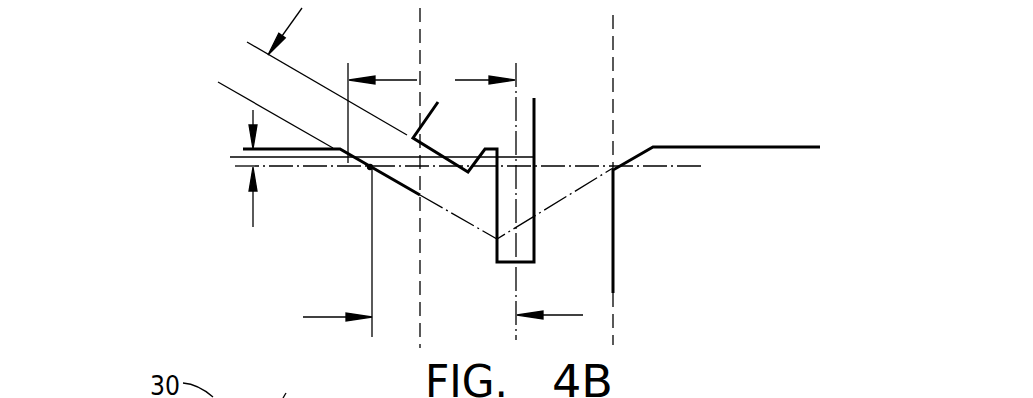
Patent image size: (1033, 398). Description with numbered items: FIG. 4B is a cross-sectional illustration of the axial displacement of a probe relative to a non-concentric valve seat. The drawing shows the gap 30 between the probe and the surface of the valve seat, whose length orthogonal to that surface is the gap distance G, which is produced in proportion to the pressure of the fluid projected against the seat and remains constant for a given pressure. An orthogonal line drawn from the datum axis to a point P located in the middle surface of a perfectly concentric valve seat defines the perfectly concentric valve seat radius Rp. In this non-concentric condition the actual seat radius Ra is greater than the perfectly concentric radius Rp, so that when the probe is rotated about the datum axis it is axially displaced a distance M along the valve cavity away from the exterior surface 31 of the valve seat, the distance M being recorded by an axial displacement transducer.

The gap 30 is at (252, 76).
The exterior surface 31 is at (751, 147).
The point P is at (370, 167).
The gap distance G is at (203, 123).
The axial displacement value M is at (253, 227).
The actual seat radius Ra is at (432, 81).
The perfectly concentric valve seat radius Rp is at (443, 325).